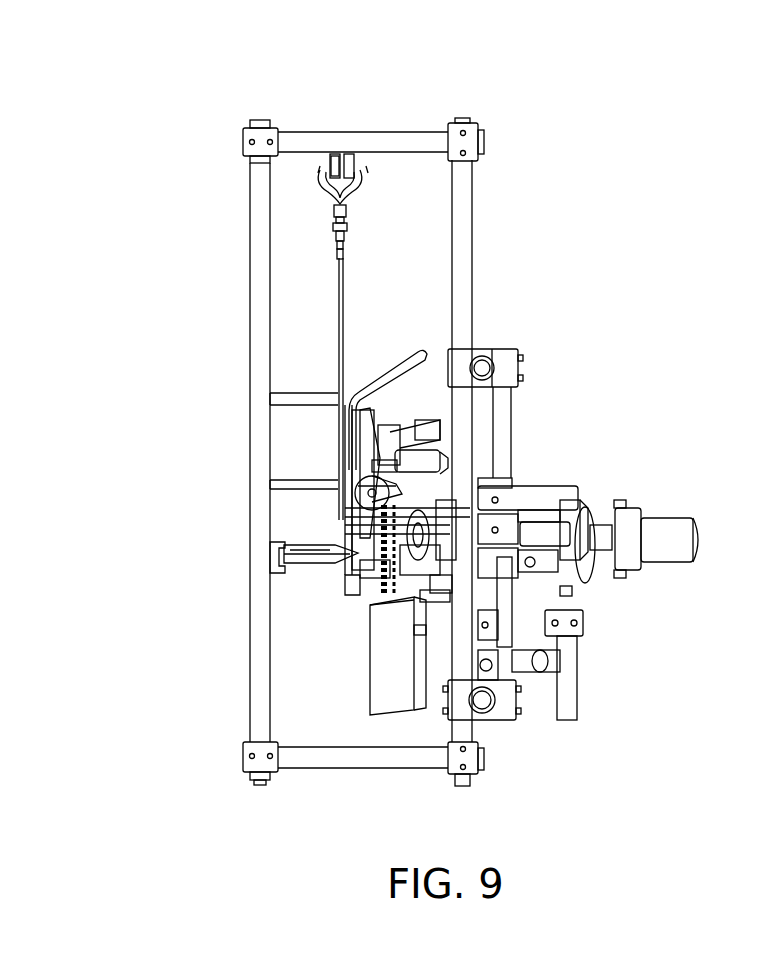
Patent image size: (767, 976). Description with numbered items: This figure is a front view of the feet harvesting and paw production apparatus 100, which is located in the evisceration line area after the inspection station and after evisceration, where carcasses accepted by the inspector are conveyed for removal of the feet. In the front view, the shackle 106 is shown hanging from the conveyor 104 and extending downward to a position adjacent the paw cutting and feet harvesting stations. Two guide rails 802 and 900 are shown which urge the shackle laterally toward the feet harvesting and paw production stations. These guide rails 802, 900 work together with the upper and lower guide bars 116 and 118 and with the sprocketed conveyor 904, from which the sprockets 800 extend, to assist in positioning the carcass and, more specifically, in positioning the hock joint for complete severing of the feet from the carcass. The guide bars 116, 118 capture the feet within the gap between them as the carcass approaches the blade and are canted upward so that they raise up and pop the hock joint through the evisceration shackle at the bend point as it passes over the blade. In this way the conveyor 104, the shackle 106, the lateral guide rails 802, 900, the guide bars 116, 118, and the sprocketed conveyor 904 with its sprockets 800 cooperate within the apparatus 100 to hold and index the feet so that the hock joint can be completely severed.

The feet harvest and paw production apparatus 100 is at (636, 132).
The conveyor 104 is at (318, 163).
The evisceration shackle 106 is at (340, 297).
The upper guide rail 116 is at (393, 362).
The lower guide rail 118 is at (345, 525).
The sprockets 800 is at (318, 558).
The guide rail 802 is at (272, 393).
The guide rail 900 is at (272, 481).
The sprocketed conveyor 904 is at (272, 565).